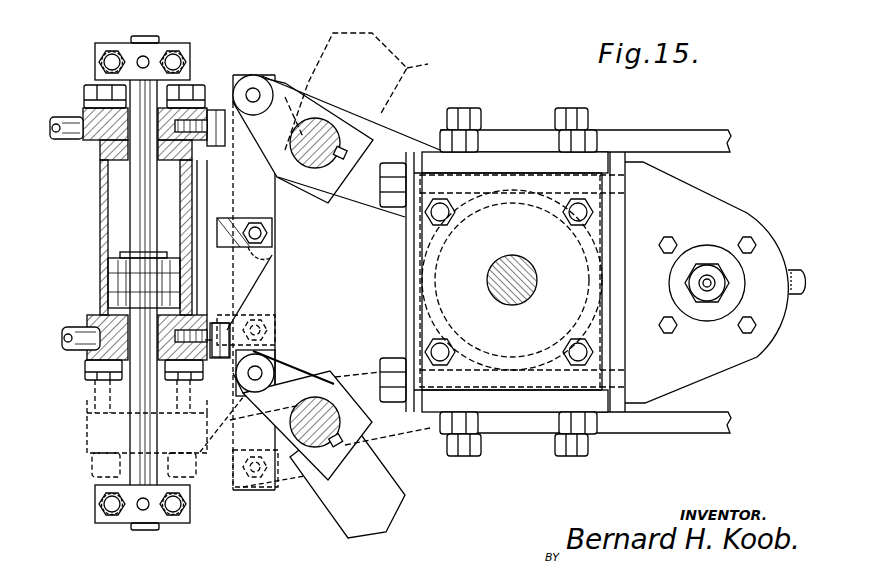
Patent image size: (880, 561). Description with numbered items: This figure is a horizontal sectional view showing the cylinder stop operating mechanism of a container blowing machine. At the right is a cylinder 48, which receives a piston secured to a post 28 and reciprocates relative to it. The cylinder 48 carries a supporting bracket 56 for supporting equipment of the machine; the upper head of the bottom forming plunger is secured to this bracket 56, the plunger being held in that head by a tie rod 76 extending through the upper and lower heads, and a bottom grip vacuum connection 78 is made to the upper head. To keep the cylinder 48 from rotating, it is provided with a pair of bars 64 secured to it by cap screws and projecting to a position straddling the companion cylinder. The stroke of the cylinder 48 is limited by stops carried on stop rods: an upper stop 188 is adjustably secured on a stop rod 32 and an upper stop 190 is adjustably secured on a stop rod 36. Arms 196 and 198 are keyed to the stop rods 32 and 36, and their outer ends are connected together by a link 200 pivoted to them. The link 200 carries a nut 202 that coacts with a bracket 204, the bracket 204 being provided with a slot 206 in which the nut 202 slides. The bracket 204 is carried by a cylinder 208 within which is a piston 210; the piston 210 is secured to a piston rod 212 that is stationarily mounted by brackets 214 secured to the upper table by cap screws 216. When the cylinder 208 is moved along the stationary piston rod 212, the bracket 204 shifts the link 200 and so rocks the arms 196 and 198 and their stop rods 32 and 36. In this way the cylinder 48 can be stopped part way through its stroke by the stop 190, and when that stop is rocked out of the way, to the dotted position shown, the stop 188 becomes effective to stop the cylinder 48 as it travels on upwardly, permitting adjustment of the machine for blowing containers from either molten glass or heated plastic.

The post 28 is at (528, 268).
The stop rod 32 is at (316, 422).
The stop rod 36 is at (318, 143).
The cylinder 48 is at (580, 242).
The supporting bracket 56 is at (714, 364).
The bar 64 is at (658, 142).
The tie rod 76 is at (700, 283).
The bottom grip vacuum connection 78 is at (794, 296).
The upper stop 188 is at (355, 520).
The upper stop 190 is at (382, 216).
The arm 196 is at (300, 373).
The arm 198 is at (280, 82).
The link 200 is at (278, 320).
The nut 202 is at (272, 242).
The bracket 204 is at (240, 265).
The slot 206 is at (260, 252).
The cylinder 208 is at (102, 226).
The piston 210 is at (122, 270).
The piston rod 212 is at (130, 198).
The bracket 214 is at (95, 62).
The cap screw 216 is at (115, 52).